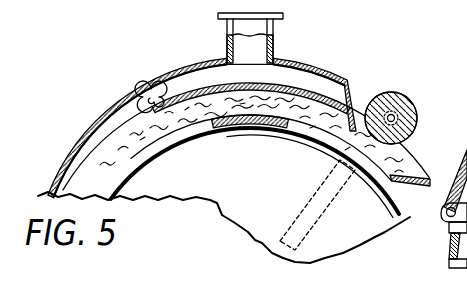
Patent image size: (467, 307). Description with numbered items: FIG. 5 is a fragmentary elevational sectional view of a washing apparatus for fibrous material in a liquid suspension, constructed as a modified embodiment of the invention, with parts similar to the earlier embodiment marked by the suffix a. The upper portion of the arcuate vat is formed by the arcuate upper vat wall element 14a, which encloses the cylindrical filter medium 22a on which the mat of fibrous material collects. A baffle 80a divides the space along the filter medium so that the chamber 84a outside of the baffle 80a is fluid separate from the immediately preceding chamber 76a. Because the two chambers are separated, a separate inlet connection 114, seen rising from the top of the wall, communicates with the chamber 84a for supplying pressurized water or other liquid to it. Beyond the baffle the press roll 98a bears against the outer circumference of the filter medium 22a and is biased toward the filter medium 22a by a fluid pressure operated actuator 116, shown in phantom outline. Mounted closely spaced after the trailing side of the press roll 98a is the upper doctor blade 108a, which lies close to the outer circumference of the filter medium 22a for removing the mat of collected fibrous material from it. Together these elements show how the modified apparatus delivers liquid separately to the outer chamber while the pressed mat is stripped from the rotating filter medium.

The arcuate upper vat wall element 14a is at (66, 172).
The filter medium 22a is at (210, 129).
The chamber 76a is at (110, 112).
The baffle 80a is at (280, 88).
The chamber 84a is at (171, 89).
The press roll 98a is at (383, 106).
The upper doctor blade 108a is at (424, 183).
The inlet connection 114 is at (262, 32).
The fluid pressure operated actuator 116 is at (302, 207).